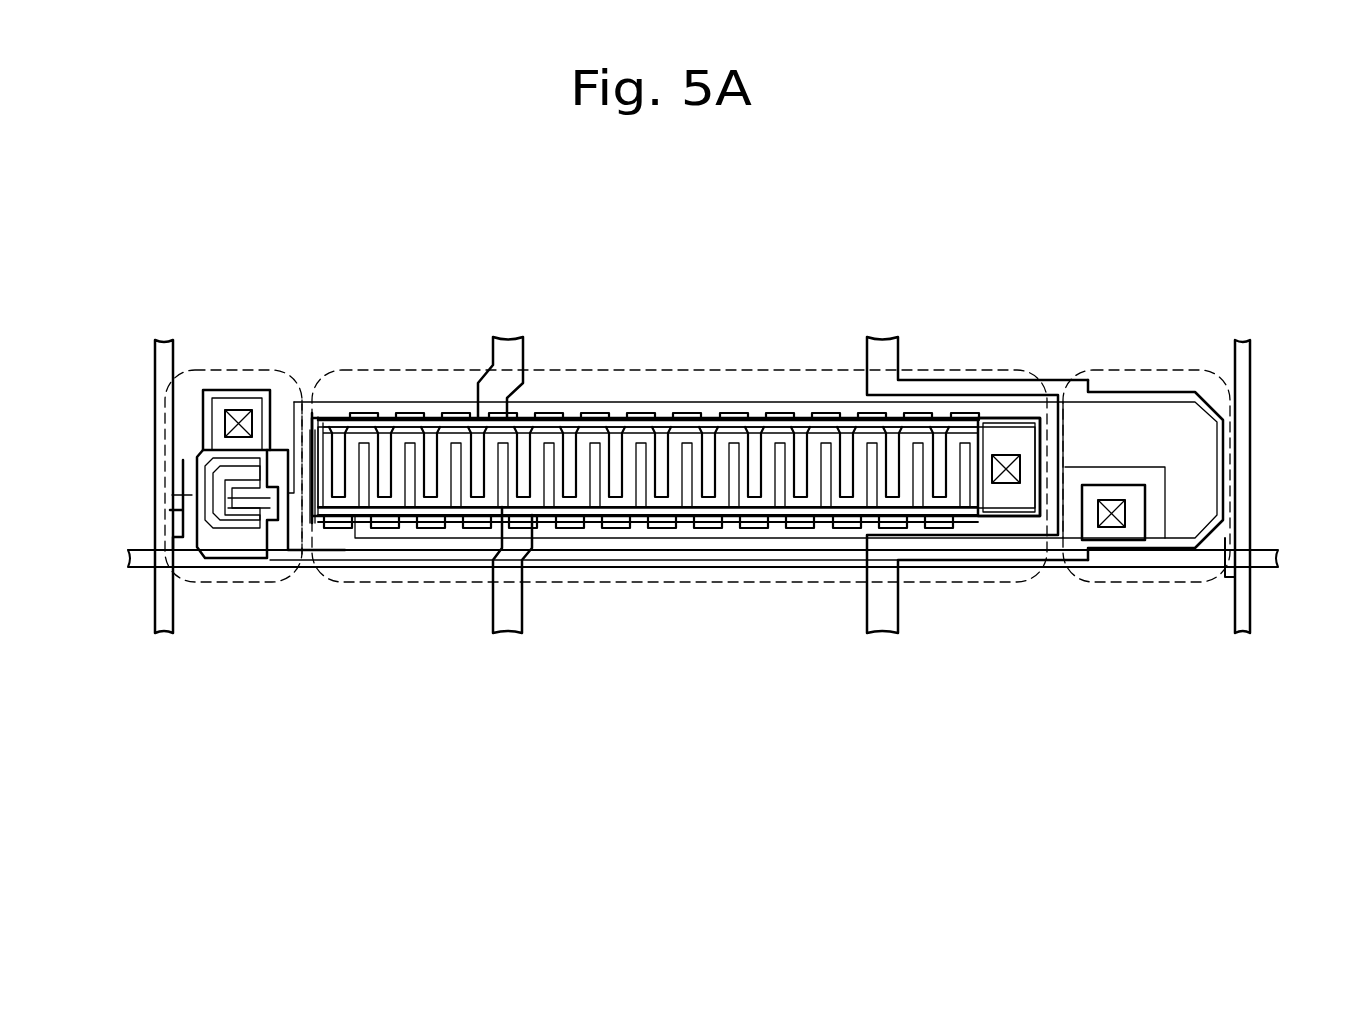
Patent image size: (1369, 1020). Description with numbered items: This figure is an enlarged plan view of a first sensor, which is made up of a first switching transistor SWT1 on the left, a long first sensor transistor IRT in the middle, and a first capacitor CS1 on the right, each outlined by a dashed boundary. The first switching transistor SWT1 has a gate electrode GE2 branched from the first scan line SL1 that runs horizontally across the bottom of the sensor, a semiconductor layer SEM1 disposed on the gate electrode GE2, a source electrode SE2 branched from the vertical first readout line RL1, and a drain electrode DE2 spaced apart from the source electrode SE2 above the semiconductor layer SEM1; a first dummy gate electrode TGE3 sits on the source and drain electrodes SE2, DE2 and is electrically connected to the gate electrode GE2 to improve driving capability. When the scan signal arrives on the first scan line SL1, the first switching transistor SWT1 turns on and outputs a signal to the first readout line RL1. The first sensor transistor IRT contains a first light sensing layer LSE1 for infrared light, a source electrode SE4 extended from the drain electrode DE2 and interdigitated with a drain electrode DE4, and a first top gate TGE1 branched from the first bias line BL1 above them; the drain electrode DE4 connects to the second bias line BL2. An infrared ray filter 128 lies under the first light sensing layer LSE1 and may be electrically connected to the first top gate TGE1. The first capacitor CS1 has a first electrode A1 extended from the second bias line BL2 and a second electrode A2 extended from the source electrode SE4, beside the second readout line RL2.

The first readout line RL1 is at (170, 340).
The second readout line RL2 is at (1238, 340).
The first scan line SL1 is at (128, 556).
The first bias line BL1 is at (505, 345).
The second bias line BL2 is at (880, 345).
The first dummy gate electrode TGE3 is at (237, 390).
The gate electrode GE2 is at (282, 530).
The drain electrode DE2 is at (248, 505).
The source electrode SE2 is at (228, 528).
The first switching transistor SWT1 is at (232, 582).
The semiconductor layer SEM1 is at (260, 462).
The first light sensing layer LSE1 is at (365, 418).
The infrared ray filter 128 is at (430, 418).
The first top gate TGE1 is at (612, 433).
The source electrode SE4 is at (686, 412).
The drain electrode DE4 is at (755, 532).
The first sensor transistor IRT is at (612, 582).
The first electrode A1 is at (1222, 405).
The second electrode A2 is at (1222, 470).
The first capacitor CS1 is at (1142, 582).